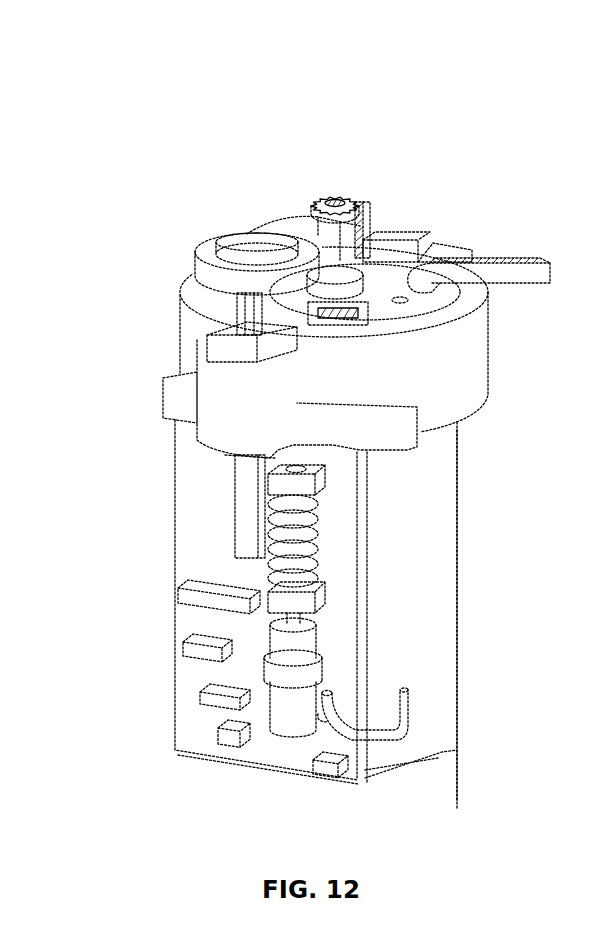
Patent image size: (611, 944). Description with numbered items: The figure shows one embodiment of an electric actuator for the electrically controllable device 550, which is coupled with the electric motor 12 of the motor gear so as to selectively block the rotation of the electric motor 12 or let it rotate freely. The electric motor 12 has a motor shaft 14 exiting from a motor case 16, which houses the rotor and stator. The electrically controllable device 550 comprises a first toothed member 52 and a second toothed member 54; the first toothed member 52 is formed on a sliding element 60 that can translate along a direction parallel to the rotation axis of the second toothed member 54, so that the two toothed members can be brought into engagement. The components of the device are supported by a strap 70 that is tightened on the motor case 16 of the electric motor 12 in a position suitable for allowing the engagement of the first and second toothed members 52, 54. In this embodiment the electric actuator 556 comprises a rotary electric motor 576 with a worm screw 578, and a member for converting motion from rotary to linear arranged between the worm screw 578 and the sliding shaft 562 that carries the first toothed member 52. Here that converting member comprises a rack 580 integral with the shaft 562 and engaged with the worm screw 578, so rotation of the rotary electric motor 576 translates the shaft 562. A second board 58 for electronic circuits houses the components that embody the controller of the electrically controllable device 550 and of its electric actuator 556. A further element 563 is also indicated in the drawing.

The electrically controllable device 550 is at (310, 133).
The first toothed member 52 is at (292, 220).
The motor shaft 14 is at (335, 200).
The second toothed member 54 is at (358, 200).
The sliding element 60 is at (197, 268).
The sliding shaft 562 is at (250, 313).
The block 563 is at (238, 309).
The strap 70 is at (468, 358).
The worm screw 578 is at (303, 532).
The rack 580 is at (257, 532).
The electric motor 12 is at (480, 537).
The electric actuator 556 is at (298, 615).
The second board 58 is at (197, 670).
The rotary electric motor 576 is at (298, 694).
The motor case 16 is at (435, 714).